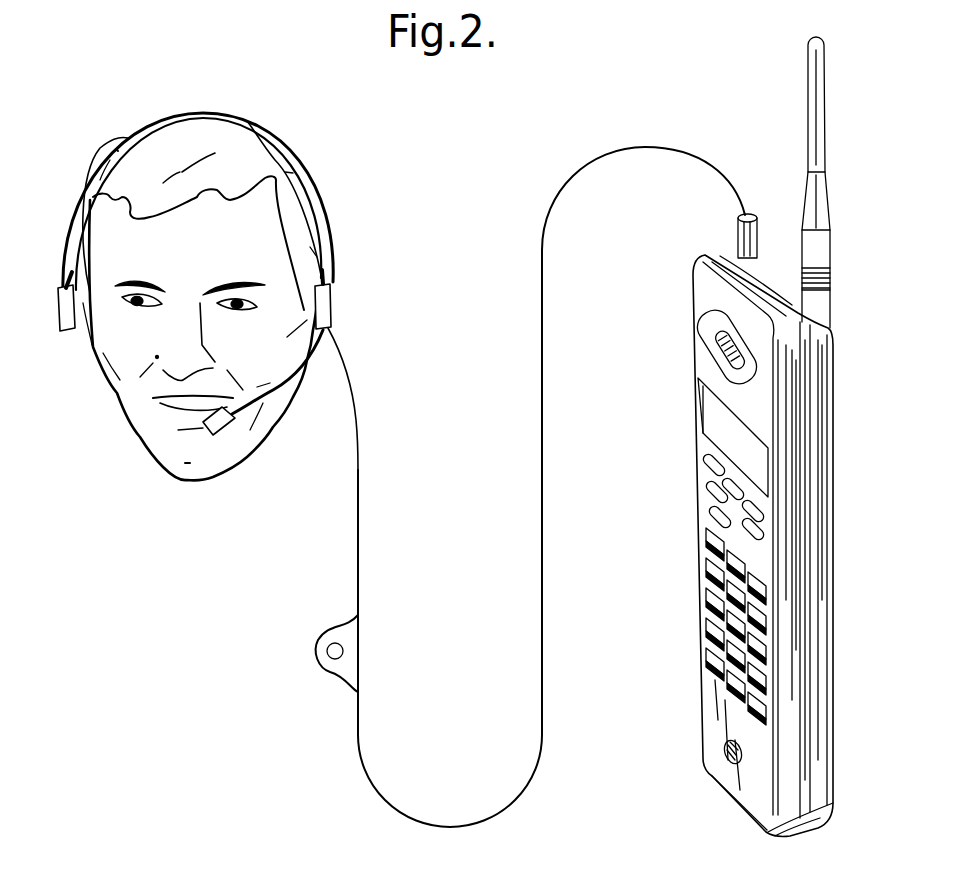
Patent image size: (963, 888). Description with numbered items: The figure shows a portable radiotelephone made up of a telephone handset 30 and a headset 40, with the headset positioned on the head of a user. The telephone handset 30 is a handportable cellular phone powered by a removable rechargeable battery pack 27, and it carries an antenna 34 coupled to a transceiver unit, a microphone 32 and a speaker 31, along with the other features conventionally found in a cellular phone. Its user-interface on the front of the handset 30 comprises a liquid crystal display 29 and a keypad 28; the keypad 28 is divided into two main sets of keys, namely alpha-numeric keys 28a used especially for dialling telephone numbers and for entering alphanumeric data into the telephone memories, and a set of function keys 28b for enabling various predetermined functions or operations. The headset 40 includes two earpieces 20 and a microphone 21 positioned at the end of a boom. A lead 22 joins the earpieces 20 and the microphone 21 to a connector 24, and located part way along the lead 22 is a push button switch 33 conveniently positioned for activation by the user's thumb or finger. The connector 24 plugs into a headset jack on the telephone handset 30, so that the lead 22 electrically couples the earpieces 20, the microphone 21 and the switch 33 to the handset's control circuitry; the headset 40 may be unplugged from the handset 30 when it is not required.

The headset 40 is at (348, 214).
The earpieces 20 is at (58, 305).
The microphone 21 is at (227, 432).
The lead 22 is at (542, 514).
The push button switch 33 is at (327, 670).
The telephone handset 30 is at (846, 339).
The removable rechargeable battery pack 27 is at (832, 740).
The connector 24 is at (737, 236).
The antenna 34 is at (808, 74).
The speaker 31 is at (708, 345).
The liquid crystal display 29 is at (712, 403).
The function keys 28b is at (727, 485).
The keypad 28 is at (764, 628).
The alpha-numeric keys 28a is at (733, 568).
The microphone 32 is at (726, 758).